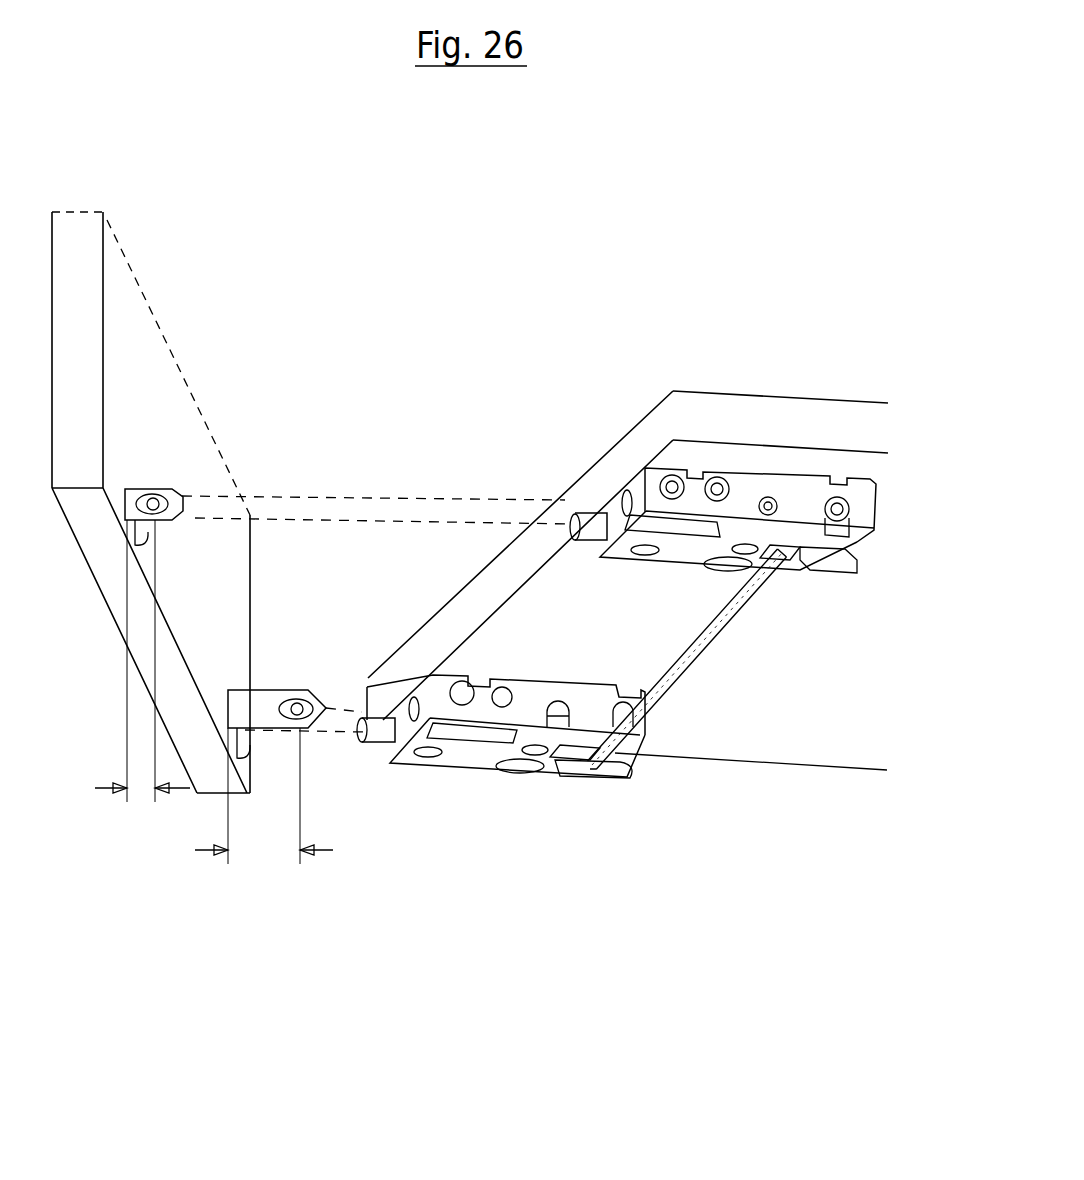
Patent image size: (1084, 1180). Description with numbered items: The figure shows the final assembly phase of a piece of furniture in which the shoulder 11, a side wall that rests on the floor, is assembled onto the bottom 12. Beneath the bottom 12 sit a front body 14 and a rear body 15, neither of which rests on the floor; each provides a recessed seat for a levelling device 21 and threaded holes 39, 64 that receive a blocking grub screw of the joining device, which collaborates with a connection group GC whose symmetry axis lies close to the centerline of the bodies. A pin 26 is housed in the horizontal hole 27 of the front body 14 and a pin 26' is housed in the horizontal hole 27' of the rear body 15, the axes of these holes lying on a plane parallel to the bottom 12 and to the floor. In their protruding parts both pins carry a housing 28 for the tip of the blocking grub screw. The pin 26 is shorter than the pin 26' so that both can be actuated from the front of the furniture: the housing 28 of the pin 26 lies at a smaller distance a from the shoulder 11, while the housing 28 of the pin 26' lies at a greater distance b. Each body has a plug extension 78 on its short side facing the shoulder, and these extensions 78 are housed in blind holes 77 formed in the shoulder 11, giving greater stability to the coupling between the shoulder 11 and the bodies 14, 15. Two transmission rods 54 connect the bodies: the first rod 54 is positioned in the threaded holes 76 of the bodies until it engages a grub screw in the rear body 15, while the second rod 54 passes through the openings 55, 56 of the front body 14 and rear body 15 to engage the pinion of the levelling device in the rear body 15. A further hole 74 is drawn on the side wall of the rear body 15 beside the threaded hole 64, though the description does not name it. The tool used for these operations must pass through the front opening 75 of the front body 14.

The shoulder 11 is at (88, 331).
The bottom 12 is at (802, 436).
The front body 14 is at (870, 567).
The rear body 15 is at (535, 795).
The levelling device 21 is at (780, 550).
The pin 26 is at (154, 450).
The pin 26' is at (277, 660).
The horizontal hole 27 is at (623, 418).
The horizontal hole 27' is at (406, 620).
The housing 28 is at (165, 485).
The threaded hole 39 is at (672, 476).
The transmission rod 54 is at (587, 620).
The opening 55 is at (838, 497).
The opening 56 is at (643, 757).
The threaded hole 64 is at (467, 680).
The hole 74 is at (507, 686).
The front opening 75 is at (766, 497).
The threaded hole 76 is at (715, 477).
The blind hole 77 is at (148, 527).
The plug extension 78 is at (583, 513).
The connection group GC is at (373, 657).
The distance a is at (142, 661).
The distance b is at (264, 796).